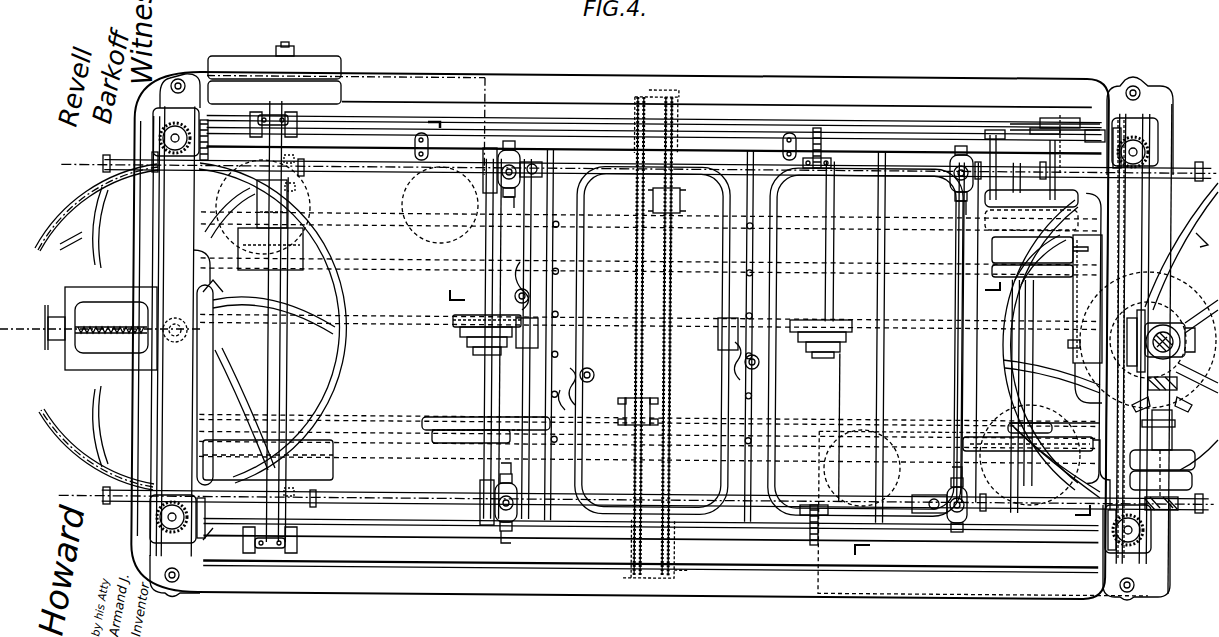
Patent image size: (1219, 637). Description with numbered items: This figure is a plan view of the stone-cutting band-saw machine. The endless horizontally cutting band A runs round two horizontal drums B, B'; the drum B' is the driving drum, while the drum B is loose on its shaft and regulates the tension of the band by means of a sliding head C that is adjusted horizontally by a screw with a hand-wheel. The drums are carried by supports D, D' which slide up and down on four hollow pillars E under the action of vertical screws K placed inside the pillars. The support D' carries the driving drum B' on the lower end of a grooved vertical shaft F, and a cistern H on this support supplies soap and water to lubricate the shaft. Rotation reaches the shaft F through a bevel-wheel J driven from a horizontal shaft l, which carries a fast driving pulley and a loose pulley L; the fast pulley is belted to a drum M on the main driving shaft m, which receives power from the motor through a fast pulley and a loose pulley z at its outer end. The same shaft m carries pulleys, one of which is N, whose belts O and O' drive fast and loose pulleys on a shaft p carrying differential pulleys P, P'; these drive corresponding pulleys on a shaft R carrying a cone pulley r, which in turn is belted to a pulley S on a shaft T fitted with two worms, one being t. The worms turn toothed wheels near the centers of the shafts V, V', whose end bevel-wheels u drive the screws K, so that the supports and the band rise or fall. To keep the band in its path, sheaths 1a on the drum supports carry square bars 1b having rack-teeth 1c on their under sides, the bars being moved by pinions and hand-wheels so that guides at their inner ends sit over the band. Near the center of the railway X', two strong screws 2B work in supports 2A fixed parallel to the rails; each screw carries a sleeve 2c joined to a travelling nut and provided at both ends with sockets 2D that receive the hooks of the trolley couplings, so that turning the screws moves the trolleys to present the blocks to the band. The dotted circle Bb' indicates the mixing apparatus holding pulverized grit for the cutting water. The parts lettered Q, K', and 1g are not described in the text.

The hollow pillar E is at (1160, 138).
The shaft V' is at (654, 128).
The shaft V is at (650, 545).
The belt O' is at (651, 210).
The belt O is at (651, 256).
The cylinder plate Q is at (649, 364).
The square bar 1b is at (639, 332).
The support D is at (187, 331).
The support D' is at (1127, 339).
The vertical screw K is at (654, 333).
The bevel-wheel u is at (657, 339).
The loose pulley z is at (274, 72).
The driving-shaft m is at (270, 327).
The pulley N is at (263, 215).
The drum M is at (268, 460).
The sliding head C is at (116, 328).
The drum B is at (192, 326).
The cutting band A is at (569, 323).
The driving drum B' is at (1051, 345).
The bevel-wheel J is at (1149, 326).
The grooved vertical shaft F is at (1182, 340).
The horizontal shaft l is at (1162, 413).
The loose pulley L is at (1162, 480).
The bracket plate K' is at (1085, 319).
The shaft p is at (1034, 394).
The railway X' is at (753, 336).
The screw 2B is at (650, 336).
The support 2A is at (652, 329).
The sleeve 2c is at (667, 198).
The socket 2D is at (633, 409).
The cone pulley r is at (487, 335).
The shaft R is at (531, 339).
The rod 1g is at (744, 332).
The differential pulley P' is at (486, 431).
The pulley S is at (822, 296).
The shaft T is at (658, 364).
The cistern H is at (726, 337).
The worm t is at (625, 333).
The mixing apparatus Bb' is at (770, 381).
The rack-teeth 1c is at (1012, 305).
The sheath 1a is at (673, 327).
The differential pulley P is at (1036, 466).